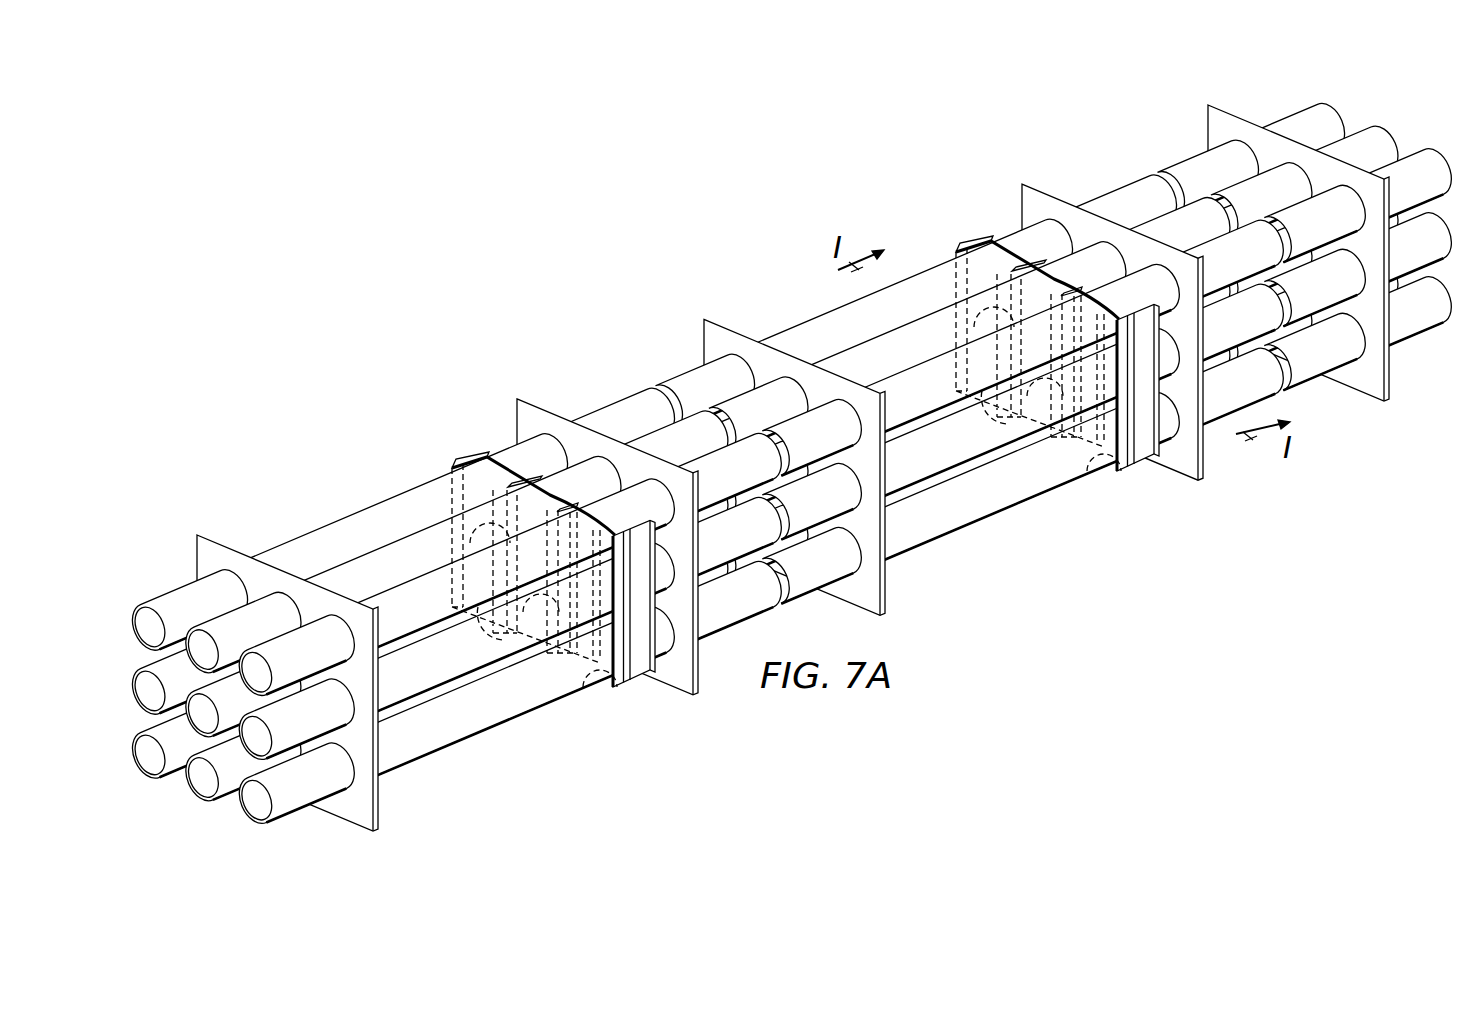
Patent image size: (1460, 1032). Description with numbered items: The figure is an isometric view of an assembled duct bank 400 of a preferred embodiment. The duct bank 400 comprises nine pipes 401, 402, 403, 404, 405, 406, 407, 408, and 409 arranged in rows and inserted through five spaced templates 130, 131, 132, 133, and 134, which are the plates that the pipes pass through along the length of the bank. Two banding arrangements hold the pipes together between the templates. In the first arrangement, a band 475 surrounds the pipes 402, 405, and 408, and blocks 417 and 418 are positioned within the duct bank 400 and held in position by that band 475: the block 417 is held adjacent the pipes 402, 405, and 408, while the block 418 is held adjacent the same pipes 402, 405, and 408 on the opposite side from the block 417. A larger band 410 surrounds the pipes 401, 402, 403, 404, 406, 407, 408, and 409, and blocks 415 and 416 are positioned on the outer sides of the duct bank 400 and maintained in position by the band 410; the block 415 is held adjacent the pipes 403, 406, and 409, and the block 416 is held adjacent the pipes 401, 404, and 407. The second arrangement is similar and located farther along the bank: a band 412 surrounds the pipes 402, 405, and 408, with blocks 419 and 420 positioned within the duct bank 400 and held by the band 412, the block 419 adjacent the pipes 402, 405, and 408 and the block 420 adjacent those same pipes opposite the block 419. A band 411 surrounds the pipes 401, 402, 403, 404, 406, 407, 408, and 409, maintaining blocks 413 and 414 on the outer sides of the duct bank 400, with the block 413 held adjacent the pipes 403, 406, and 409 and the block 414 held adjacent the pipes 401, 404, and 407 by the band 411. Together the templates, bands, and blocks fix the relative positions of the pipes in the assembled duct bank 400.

The duct bank 400 is at (771, 462).
The template 130 is at (218, 540).
The template 131 is at (527, 421).
The template 132 is at (710, 342).
The template 133 is at (1027, 203).
The template 134 is at (1210, 128).
The pipe 401 is at (168, 601).
The pipe 402 is at (218, 622).
The pipe 403 is at (285, 640).
The pipe 404 is at (162, 666).
The pipe 405 is at (192, 732).
The pipe 406 is at (328, 718).
The pipe 407 is at (160, 733).
The pipe 408 is at (208, 798).
The pipe 409 is at (293, 803).
The band 410 is at (522, 554).
The band 411 is at (1026, 338).
The band 412 is at (1037, 227).
The block 413 is at (1094, 424).
The block 414 is at (1009, 326).
The block 415 is at (618, 659).
The block 416 is at (450, 496).
The block 417 is at (450, 561).
The block 418 is at (480, 663).
The block 419 is at (1023, 431).
The block 420 is at (978, 351).
The band 475 is at (573, 500).